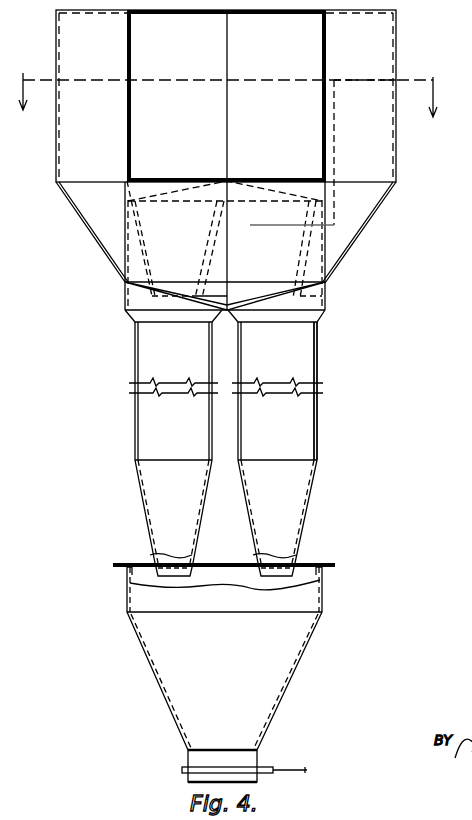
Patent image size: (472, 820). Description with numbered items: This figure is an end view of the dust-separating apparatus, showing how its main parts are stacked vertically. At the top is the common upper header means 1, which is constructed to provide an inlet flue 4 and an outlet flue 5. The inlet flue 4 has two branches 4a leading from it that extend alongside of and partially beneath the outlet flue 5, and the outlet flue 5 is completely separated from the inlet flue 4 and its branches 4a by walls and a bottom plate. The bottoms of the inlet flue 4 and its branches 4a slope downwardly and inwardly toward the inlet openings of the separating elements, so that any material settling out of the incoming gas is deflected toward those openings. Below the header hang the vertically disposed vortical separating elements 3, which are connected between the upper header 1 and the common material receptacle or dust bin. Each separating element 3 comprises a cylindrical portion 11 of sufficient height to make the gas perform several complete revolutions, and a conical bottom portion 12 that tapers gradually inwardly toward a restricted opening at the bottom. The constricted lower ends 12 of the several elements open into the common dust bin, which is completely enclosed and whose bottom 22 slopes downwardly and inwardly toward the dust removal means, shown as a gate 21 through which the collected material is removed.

The common upper header means 1 is at (396, 142).
The inlet flue 4 is at (138, 128).
The branches of the inlet flue 4a is at (415, 172).
The outlet flue 5 is at (228, 97).
The vortical separating elements 3 is at (225, 385).
The cylindrical portion 11 is at (318, 355).
The conical bottom portion 12 is at (305, 520).
The bottom of the dust bin 22 is at (152, 672).
The gate 21 is at (188, 763).